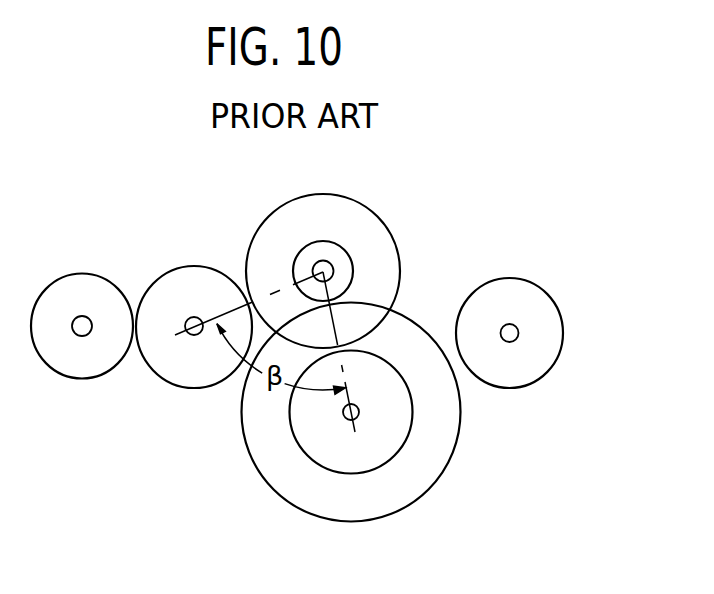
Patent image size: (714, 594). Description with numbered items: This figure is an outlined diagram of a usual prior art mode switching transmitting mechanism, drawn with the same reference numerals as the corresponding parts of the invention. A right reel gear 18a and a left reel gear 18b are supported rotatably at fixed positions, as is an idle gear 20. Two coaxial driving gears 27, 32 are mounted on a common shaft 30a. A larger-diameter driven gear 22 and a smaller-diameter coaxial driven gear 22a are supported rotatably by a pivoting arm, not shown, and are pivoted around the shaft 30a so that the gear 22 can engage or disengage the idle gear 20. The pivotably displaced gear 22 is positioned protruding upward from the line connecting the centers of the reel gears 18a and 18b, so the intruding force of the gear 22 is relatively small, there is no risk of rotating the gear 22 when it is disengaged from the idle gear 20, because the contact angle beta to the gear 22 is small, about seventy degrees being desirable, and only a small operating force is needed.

The left reel gear 18b is at (75, 275).
The idle gear 20 is at (195, 267).
The driven gear 22 is at (383, 220).
The driven gear 22a is at (353, 266).
The right reel gear 18a is at (558, 300).
The driving gear 27 is at (462, 440).
The driving gear 32 is at (400, 453).
The shaft 30a is at (343, 414).